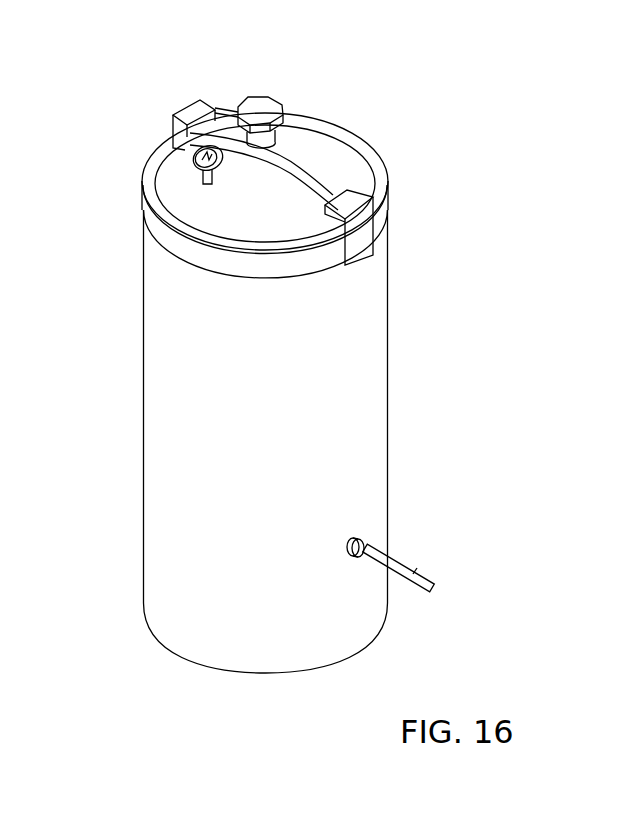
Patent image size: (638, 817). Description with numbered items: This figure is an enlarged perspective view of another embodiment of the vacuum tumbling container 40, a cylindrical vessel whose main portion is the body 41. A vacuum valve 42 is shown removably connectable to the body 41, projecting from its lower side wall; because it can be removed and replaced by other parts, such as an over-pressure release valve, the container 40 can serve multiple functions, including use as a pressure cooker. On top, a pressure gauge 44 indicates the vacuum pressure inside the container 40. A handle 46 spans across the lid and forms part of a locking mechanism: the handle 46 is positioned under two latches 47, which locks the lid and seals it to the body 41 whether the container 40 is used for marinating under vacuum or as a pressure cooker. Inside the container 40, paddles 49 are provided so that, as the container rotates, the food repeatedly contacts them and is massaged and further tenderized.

The vacuum tumbling container 40 is at (158, 76).
The body 41 is at (143, 336).
The vacuum valve 42 is at (420, 570).
The pressure gauge 44 is at (198, 161).
The handle 46 is at (300, 158).
The latches 47 is at (353, 196).
The paddles 49 is at (357, 540).